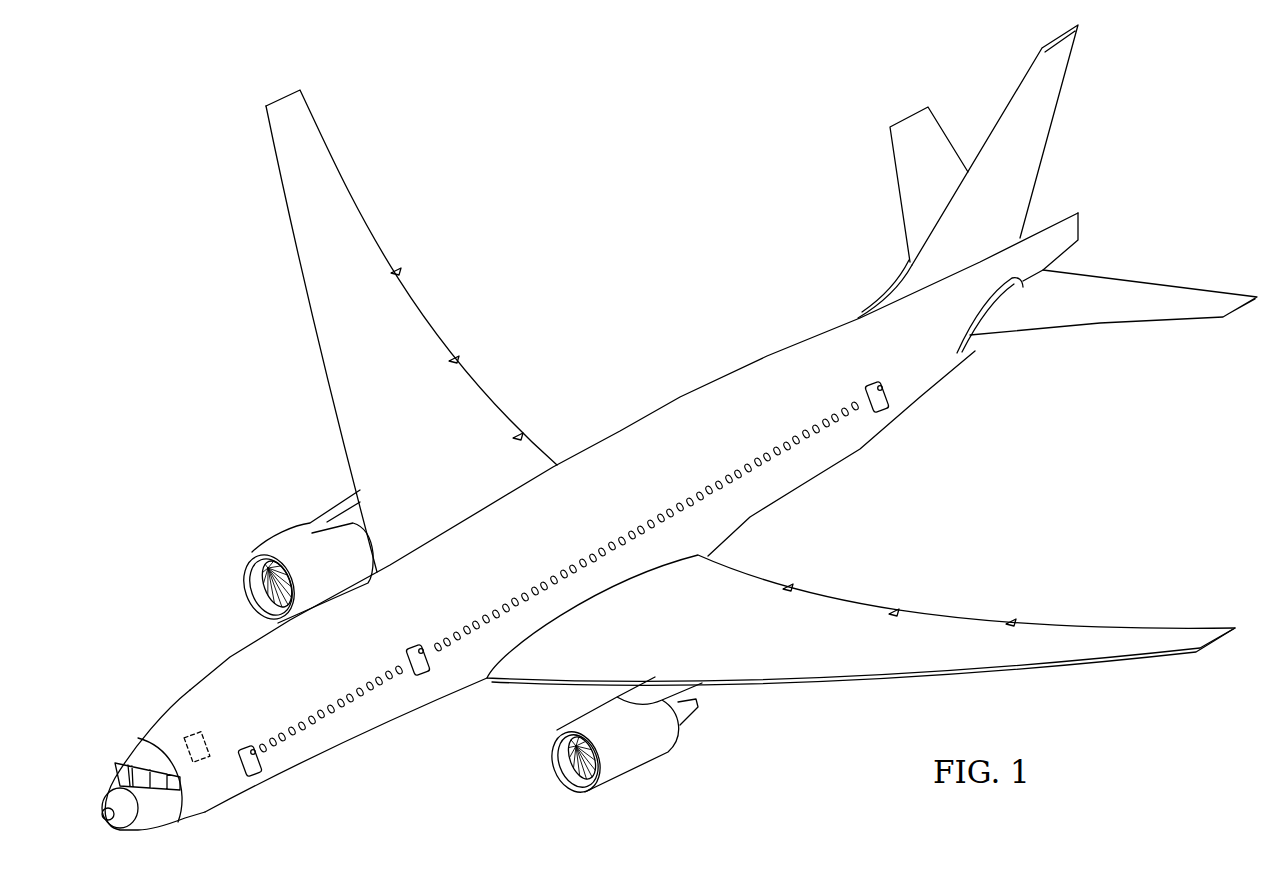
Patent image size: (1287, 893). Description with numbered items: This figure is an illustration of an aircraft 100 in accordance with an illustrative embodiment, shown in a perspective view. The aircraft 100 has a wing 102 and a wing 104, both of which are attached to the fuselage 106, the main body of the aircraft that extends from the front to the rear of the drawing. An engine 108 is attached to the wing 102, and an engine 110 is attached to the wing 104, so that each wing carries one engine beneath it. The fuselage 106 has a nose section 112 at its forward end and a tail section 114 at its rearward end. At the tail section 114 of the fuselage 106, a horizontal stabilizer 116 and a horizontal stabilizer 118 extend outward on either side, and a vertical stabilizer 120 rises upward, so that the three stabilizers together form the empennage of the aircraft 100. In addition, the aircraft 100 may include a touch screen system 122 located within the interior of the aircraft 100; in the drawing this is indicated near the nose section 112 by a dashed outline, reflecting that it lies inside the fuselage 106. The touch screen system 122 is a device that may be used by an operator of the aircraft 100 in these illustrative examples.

The aircraft 100 is at (679, 427).
The wing 102 is at (411, 326).
The wing 104 is at (930, 628).
The fuselage 106 is at (767, 355).
The engine 108 is at (288, 543).
The engine 110 is at (642, 758).
The nose section 112 is at (177, 717).
The tail section 114 is at (1057, 189).
The horizontal stabilizer 116 is at (932, 137).
The horizontal stabilizer 118 is at (1123, 292).
The vertical stabilizer 120 is at (1053, 70).
The touch screen system 122 is at (205, 738).